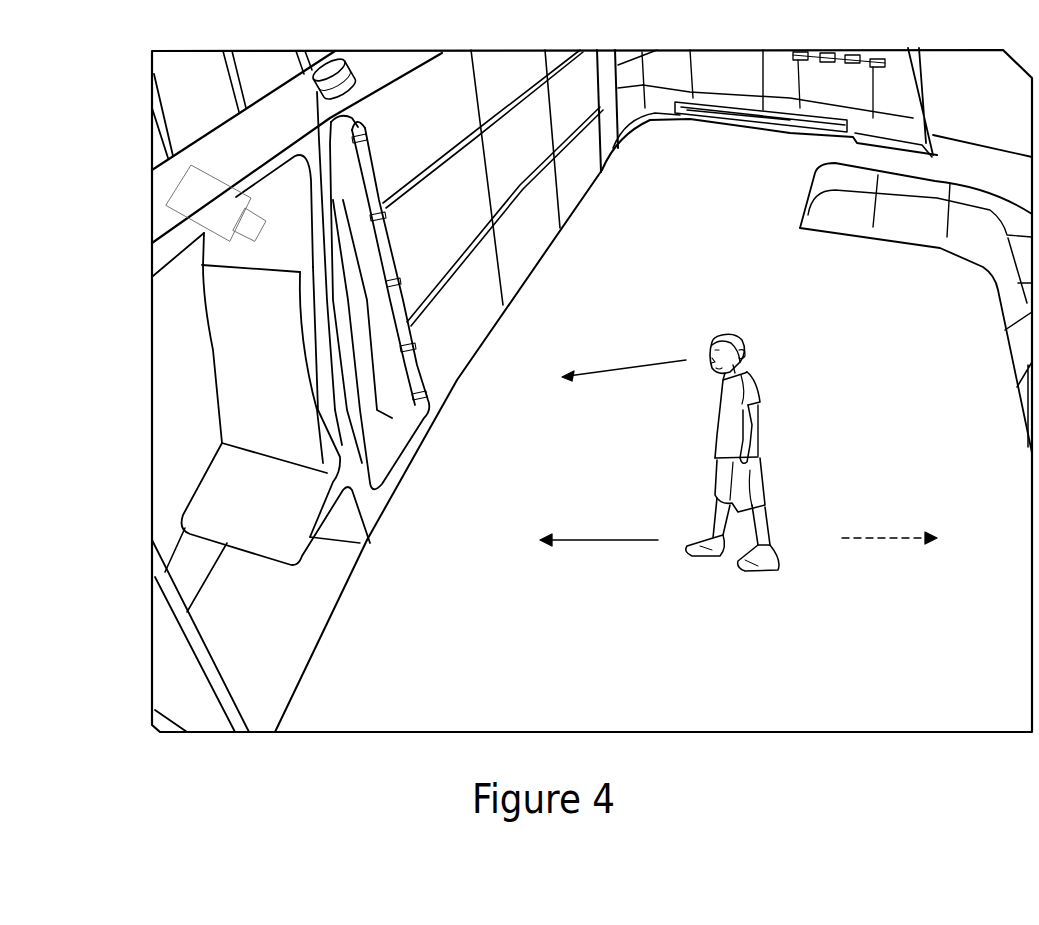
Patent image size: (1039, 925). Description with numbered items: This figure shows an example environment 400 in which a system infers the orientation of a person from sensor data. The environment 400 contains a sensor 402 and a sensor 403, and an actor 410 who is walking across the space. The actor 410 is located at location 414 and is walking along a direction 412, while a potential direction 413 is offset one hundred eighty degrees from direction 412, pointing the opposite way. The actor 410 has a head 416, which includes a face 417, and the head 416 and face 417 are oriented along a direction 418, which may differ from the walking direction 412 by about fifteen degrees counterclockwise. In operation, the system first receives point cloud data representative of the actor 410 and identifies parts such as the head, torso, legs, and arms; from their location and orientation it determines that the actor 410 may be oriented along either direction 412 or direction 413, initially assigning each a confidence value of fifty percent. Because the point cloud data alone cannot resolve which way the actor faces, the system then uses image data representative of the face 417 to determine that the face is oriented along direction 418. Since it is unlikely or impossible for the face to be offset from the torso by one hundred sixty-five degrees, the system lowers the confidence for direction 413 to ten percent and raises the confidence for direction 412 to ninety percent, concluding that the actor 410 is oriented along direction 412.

The environment 400 is at (133, 127).
The sensor 402 is at (348, 62).
The sensor 403 is at (220, 190).
The actor 410 is at (758, 414).
The direction 412 is at (616, 535).
The potential direction 413 is at (910, 533).
The location 414 is at (606, 425).
The head 416 is at (722, 334).
The face 417 is at (746, 338).
The direction 418 is at (651, 360).